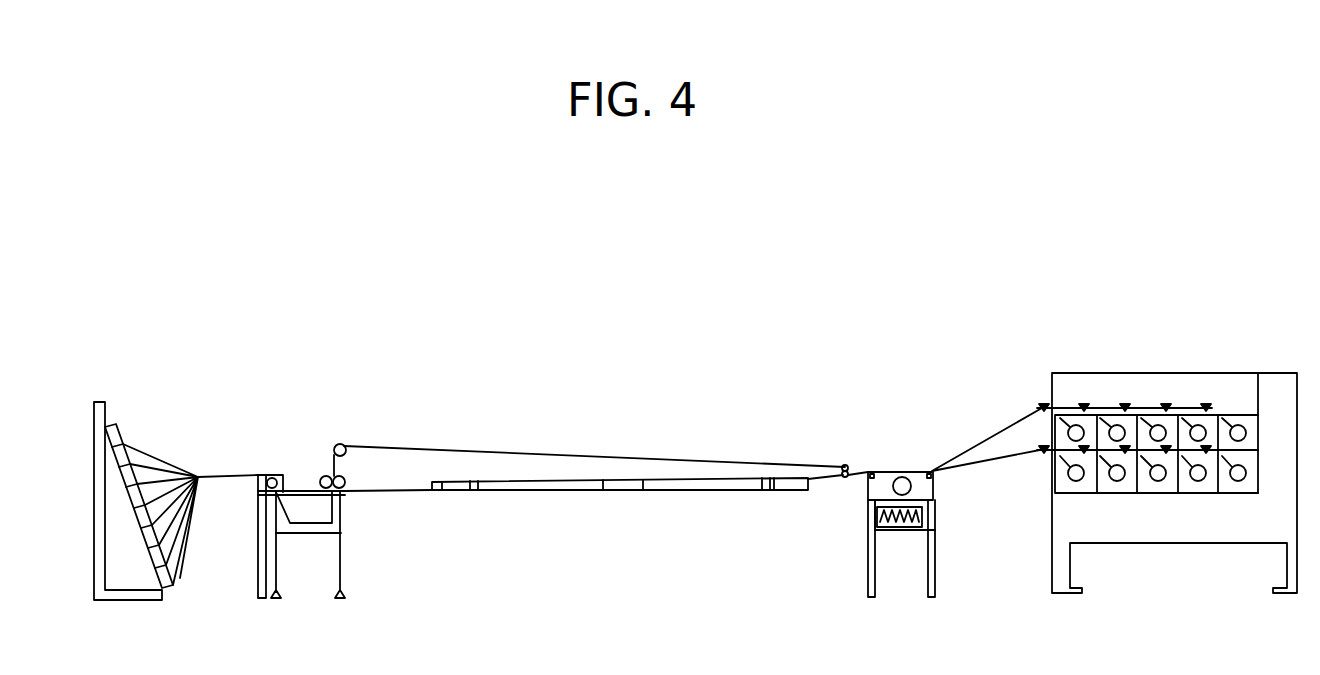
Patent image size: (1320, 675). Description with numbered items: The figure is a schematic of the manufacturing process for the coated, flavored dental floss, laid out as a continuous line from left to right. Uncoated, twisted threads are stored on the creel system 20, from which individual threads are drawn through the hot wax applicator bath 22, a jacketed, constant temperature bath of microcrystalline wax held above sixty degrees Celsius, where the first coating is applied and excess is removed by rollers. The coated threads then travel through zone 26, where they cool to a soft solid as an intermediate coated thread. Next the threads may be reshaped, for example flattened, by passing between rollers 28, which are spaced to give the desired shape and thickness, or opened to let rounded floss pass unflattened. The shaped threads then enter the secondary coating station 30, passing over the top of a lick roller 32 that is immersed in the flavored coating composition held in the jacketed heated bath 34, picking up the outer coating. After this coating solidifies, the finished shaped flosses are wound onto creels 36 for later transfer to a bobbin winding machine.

The creel system 20 is at (137, 418).
The hot wax applicator bath 22 is at (303, 425).
The zone 26 is at (587, 412).
The rollers 28 is at (846, 464).
The secondary coating station 30 is at (920, 476).
The lick roller 32 is at (903, 483).
The jacketed heated bath 34 is at (862, 493).
The creels 36 is at (1148, 397).